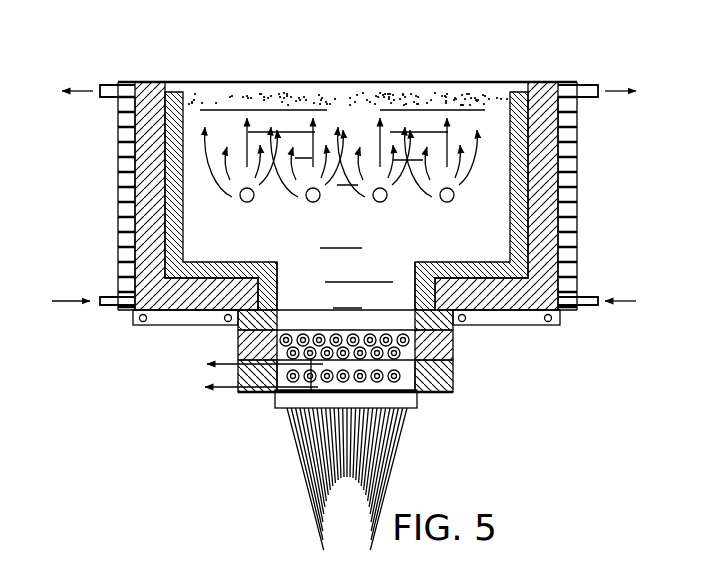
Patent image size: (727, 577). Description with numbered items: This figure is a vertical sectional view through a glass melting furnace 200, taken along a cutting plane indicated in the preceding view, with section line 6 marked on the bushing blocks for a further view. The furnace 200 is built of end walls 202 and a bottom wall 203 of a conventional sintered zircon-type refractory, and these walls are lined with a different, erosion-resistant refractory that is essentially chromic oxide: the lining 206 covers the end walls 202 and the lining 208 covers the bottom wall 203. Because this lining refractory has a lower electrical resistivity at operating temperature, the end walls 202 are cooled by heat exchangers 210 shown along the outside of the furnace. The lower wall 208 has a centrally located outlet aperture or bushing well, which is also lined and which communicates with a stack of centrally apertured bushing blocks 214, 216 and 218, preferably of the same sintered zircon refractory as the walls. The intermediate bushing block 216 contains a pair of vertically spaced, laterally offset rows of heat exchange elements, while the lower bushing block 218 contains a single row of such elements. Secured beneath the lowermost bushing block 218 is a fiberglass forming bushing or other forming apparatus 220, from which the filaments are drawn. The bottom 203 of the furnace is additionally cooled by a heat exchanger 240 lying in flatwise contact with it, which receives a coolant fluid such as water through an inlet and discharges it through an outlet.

The furnace 200 is at (148, 78).
The end walls 202 is at (140, 150).
The bottom wall 203 is at (222, 287).
The lining 206 is at (172, 168).
The lining 208 is at (241, 268).
The heat exchangers 210 is at (117, 117).
The bushing block 214 is at (455, 330).
The intermediate bushing block 216 is at (455, 356).
The lower bushing block 218 is at (455, 381).
The fiberglass forming bushing 220 is at (421, 411).
The heat exchanger 240 is at (547, 328).
The section line 6- 6 is at (250, 372).